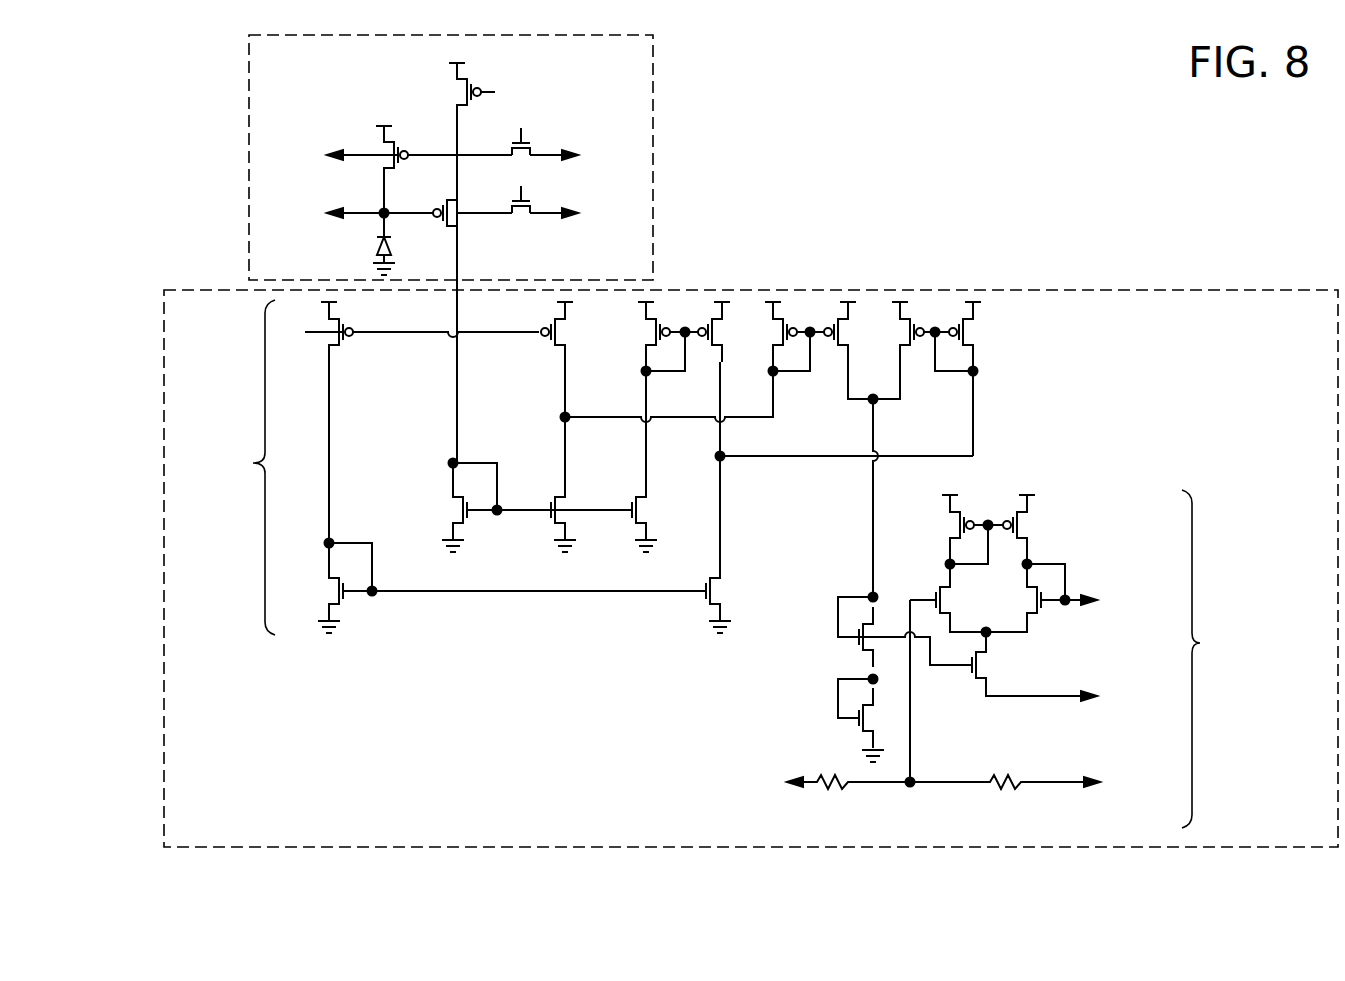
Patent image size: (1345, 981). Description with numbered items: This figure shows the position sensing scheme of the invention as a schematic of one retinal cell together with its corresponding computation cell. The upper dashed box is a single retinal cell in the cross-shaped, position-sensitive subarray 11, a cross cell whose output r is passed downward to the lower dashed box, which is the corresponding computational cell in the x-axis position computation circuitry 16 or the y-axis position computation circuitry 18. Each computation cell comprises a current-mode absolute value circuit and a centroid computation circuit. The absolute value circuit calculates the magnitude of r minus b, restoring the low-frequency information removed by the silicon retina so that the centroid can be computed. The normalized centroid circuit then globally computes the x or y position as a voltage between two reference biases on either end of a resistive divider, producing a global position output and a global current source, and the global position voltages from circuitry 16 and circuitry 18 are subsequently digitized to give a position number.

The cross-shaped position-sensitive subarray 11 is at (653, 157).
The x-axis position computation circuitry 16 is at (1163, 290).
The y-axis position computation circuitry 18 is at (751, 514).